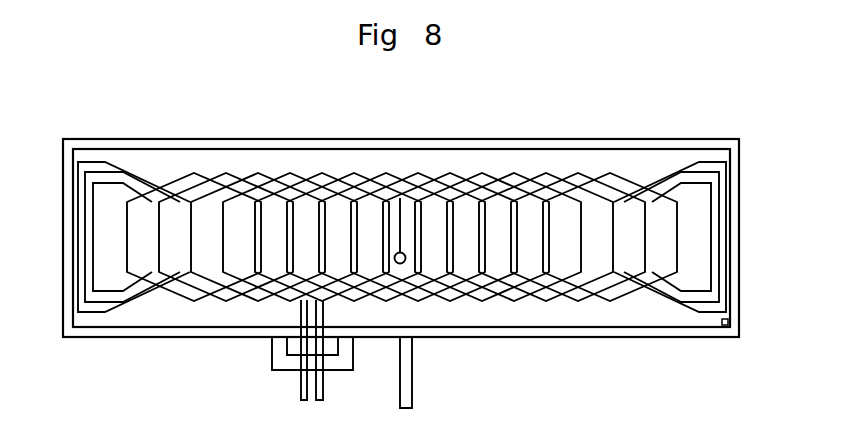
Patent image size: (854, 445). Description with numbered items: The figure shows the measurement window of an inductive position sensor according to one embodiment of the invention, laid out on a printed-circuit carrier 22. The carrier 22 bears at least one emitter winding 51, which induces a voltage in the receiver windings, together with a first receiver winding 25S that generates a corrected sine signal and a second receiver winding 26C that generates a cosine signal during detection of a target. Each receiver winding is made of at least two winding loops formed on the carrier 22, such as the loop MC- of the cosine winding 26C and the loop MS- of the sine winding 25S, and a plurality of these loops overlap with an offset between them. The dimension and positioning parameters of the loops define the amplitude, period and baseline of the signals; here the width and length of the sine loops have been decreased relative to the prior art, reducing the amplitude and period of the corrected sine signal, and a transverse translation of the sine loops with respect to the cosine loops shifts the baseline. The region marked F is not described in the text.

The emitter winding 51 is at (93, 139).
The first receiver winding 25S is at (158, 150).
The second receiver winding 26C is at (243, 170).
The printed-circuit carrier 22 is at (521, 139).
The film F is at (605, 163).
The winding loop MC- is at (225, 283).
The winding loop MS- is at (393, 307).